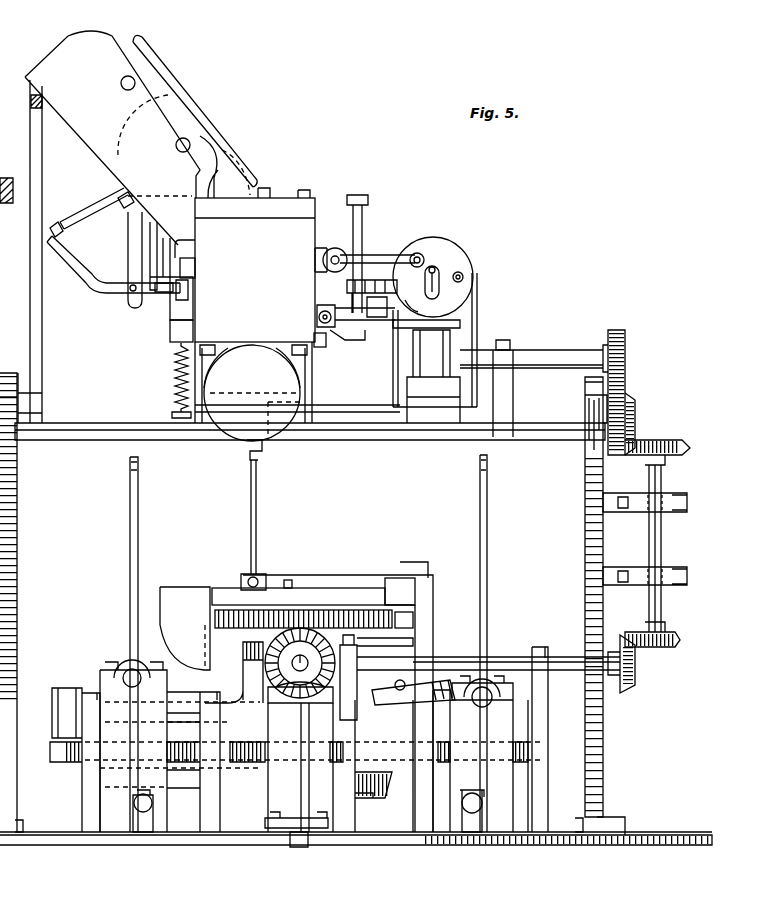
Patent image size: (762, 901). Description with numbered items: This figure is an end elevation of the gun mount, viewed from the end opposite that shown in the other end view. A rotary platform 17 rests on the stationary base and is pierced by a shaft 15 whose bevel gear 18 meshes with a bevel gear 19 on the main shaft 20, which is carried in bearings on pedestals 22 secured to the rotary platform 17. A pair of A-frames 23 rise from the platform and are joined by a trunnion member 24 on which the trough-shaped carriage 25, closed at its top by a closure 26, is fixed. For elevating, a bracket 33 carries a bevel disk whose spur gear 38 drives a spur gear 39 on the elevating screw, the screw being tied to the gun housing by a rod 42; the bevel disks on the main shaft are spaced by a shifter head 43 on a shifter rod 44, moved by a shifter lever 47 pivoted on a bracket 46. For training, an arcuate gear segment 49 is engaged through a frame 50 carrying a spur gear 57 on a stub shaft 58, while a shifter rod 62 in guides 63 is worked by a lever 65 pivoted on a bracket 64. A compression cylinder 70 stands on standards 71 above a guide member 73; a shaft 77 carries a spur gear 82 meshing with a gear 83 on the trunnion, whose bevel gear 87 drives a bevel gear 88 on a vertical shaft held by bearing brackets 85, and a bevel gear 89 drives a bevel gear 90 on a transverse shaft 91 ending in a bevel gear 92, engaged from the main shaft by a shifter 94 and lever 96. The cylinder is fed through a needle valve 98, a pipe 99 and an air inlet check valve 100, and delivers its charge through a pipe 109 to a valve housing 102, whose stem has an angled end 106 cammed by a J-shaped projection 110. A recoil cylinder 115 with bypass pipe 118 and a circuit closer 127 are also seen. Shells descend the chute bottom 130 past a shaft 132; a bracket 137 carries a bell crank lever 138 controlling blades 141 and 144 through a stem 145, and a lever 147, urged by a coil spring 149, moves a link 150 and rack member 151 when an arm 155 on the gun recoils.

The shaft 15 is at (300, 796).
The rotary platform 17 is at (42, 832).
The bevel gear 18 is at (333, 697).
The bevel gear 19 is at (378, 680).
The main shaft 20 is at (305, 640).
The pedestal 22 is at (322, 800).
The A-frame 23 is at (17, 508).
The trunnion member 24 is at (90, 443).
The carriage 25 is at (255, 252).
The closure 26 is at (288, 196).
The bracket 33 is at (338, 688).
The spur gear 38 is at (286, 580).
The spur gear 39 is at (222, 588).
The rod 42 is at (250, 519).
The shifter head 43 is at (400, 645).
The shifter rod 44 is at (495, 700).
The bracket 46 is at (472, 800).
The shifter lever 47 is at (488, 571).
The arcuate gear segment 49 is at (247, 764).
The frame 50 is at (418, 578).
The spur gear 57 is at (400, 620).
The stub shaft 58 is at (350, 586).
The shifter rod 62 is at (110, 682).
The guide 63 is at (125, 665).
The bracket 64 is at (150, 808).
The lever 65 is at (131, 587).
The compression cylinder 70 is at (450, 247).
The standard 71 is at (478, 320).
The guide member 73 is at (407, 390).
The shaft 77 is at (548, 350).
The spur gear 82 is at (620, 330).
The gear 83 is at (590, 415).
The bearing bracket 85 is at (688, 500).
The bevel gear 87 is at (636, 409).
The bevel gear 88 is at (683, 441).
The bevel gear 89 is at (660, 647).
The bevel gear 90 is at (638, 692).
The transverse shaft 91 is at (510, 656).
The bevel gear 92 is at (320, 606).
The shifter 94 is at (180, 705).
The lever 96 is at (67, 717).
The needle valve 98 is at (433, 265).
The pipe 99 is at (417, 284).
The air inlet check valve 100 is at (465, 278).
The valve housing 102 is at (323, 258).
The angled end 106 is at (318, 305).
The pipe 109 is at (393, 252).
The J-shaped projection 110 is at (407, 308).
The cylinder 115 is at (235, 420).
The bypass pipe 118 is at (260, 466).
The circuit closer 127 is at (314, 326).
The chute bottom 130 is at (90, 140).
The shaft 132 is at (190, 142).
The bracket 137 is at (128, 258).
The bell crank lever 138 is at (94, 280).
The blade 141 is at (196, 252).
The blade 144 is at (117, 212).
The stem 145 is at (85, 217).
The lever 147 is at (172, 330).
The coil spring 149 is at (176, 362).
The link 150 is at (190, 302).
The rack member 151 is at (158, 238).
The arm 155 is at (196, 266).